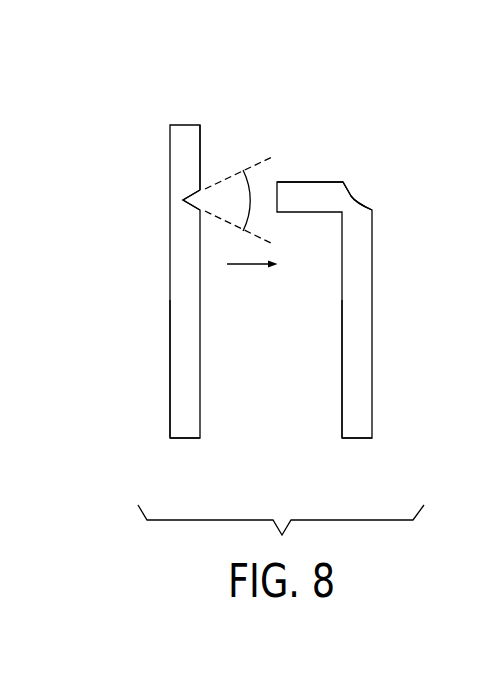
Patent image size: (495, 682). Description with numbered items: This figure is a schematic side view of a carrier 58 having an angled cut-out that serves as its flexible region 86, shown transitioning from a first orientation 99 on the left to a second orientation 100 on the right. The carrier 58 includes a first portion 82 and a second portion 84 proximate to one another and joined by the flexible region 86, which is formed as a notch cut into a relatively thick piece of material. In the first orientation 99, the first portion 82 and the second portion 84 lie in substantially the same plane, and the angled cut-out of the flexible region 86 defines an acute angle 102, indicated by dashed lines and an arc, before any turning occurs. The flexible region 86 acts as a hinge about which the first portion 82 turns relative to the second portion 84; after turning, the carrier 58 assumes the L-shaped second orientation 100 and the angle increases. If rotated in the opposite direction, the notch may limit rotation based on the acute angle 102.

The first orientation 99 is at (178, 84).
The second orientation 100 is at (357, 102).
The first portion 82 is at (190, 150).
The second portion 84 is at (185, 372).
The carrier 58 is at (187, 449).
The flexible region 86 is at (153, 202).
The acute angle 102 is at (250, 187).